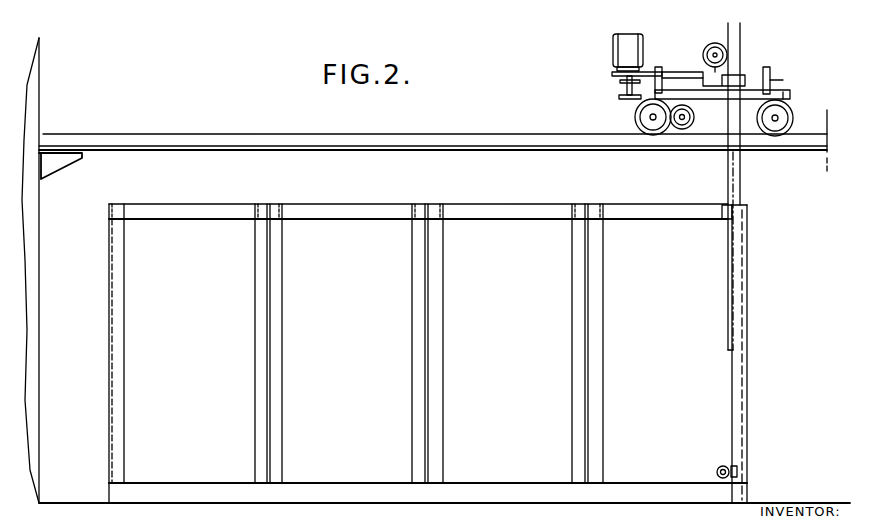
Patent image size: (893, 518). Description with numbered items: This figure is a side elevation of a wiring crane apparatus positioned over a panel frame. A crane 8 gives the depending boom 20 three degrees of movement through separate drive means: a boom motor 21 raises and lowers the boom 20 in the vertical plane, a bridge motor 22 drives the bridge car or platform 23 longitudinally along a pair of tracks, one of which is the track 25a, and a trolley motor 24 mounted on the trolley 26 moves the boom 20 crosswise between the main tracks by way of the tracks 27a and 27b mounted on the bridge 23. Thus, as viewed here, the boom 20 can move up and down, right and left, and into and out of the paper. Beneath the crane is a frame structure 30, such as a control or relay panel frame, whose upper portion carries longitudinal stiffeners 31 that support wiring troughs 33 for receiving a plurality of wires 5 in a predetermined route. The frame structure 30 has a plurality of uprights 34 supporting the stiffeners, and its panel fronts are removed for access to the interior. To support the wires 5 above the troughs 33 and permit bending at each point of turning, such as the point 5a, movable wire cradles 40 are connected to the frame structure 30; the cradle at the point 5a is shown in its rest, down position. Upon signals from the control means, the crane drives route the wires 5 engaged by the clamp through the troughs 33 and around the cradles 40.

The wires 5 is at (698, 459).
The point of turning 5a is at (728, 468).
The crane 8 is at (697, 71).
The boom 20 is at (740, 192).
The boom motor 21 is at (706, 45).
The bridge motor 22 is at (691, 120).
The bridge car 23 is at (784, 97).
The trolley motor 24 is at (614, 50).
The track 25a is at (464, 134).
The trolley 26 is at (682, 78).
The track 27a is at (648, 92).
The track 27b is at (778, 92).
The frame structure 30 is at (448, 332).
The longitudinal stiffeners 31 is at (208, 216).
The wiring troughs 33 is at (121, 204).
The uprights 34 is at (762, 334).
The movable wire cradles 40 is at (716, 471).